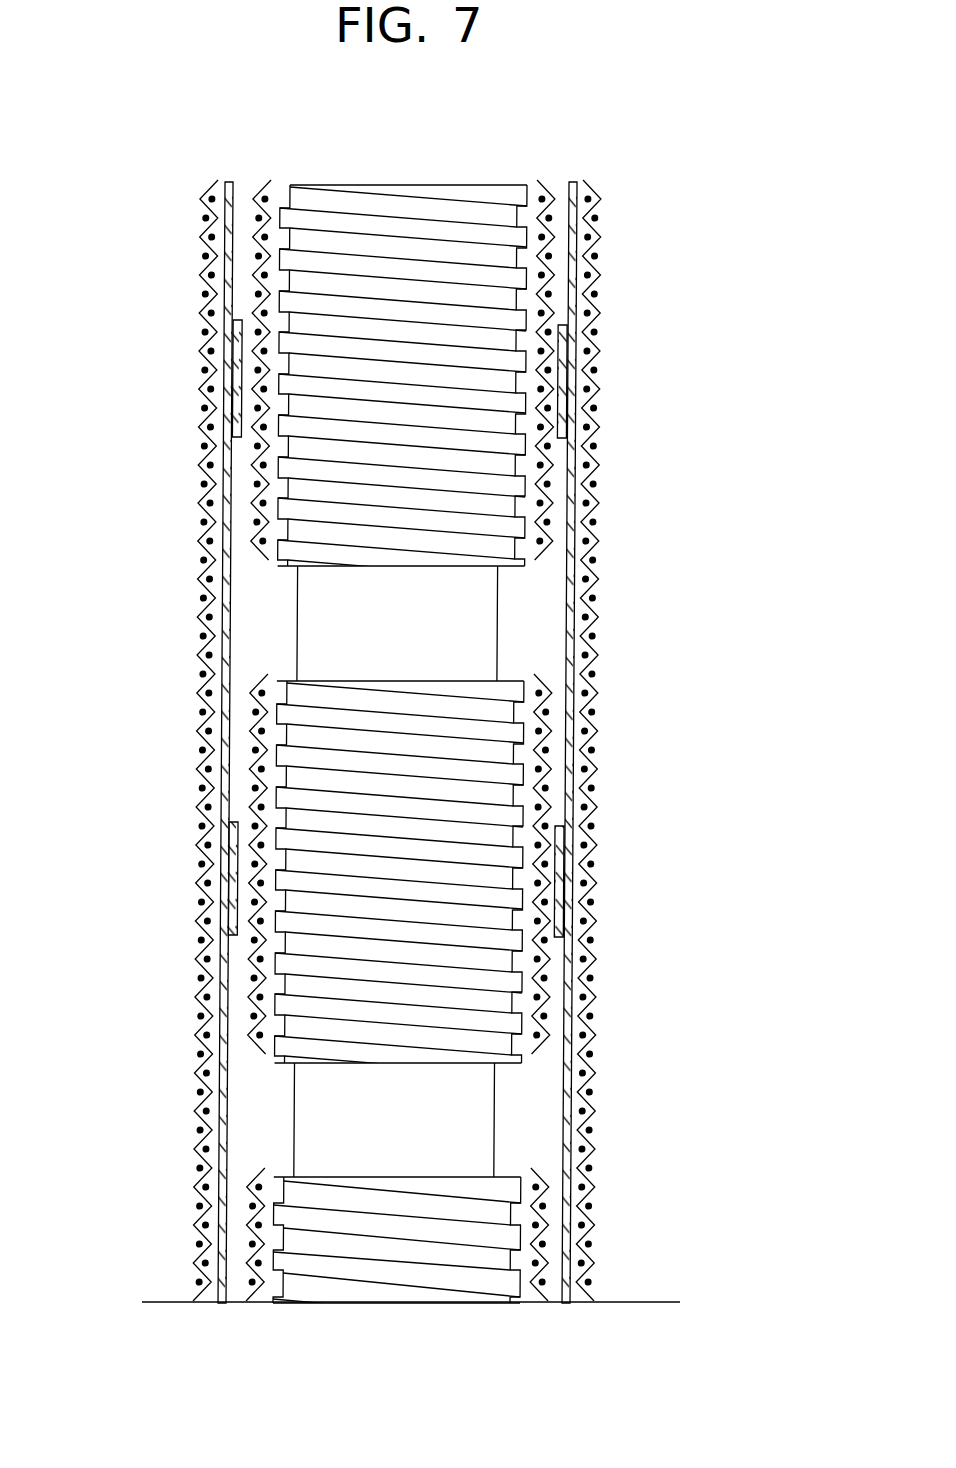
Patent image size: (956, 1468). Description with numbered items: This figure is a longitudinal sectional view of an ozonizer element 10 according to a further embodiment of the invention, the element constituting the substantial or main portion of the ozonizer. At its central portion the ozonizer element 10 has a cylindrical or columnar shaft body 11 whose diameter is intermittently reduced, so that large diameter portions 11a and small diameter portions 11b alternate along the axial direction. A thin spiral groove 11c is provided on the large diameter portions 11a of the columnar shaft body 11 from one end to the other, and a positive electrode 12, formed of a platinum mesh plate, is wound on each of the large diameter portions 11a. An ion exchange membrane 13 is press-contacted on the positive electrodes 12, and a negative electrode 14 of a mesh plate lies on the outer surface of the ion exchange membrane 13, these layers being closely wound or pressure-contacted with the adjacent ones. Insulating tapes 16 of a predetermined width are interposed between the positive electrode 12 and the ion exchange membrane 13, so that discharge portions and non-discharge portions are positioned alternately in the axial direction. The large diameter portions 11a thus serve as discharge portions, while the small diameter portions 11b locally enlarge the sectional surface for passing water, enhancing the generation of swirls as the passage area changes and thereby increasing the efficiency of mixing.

The ozonizer element 10 is at (200, 210).
The columnar shaft body 11 is at (383, 727).
The large diameter portion 11a is at (315, 287).
The small diameter portion 11b is at (350, 627).
The thin spiral groove 11c is at (278, 363).
The positive electrode 12 is at (248, 397).
The ion exchange membrane 13 is at (568, 256).
The negative electrode 14 is at (592, 522).
The insulating tape 16 is at (240, 435).